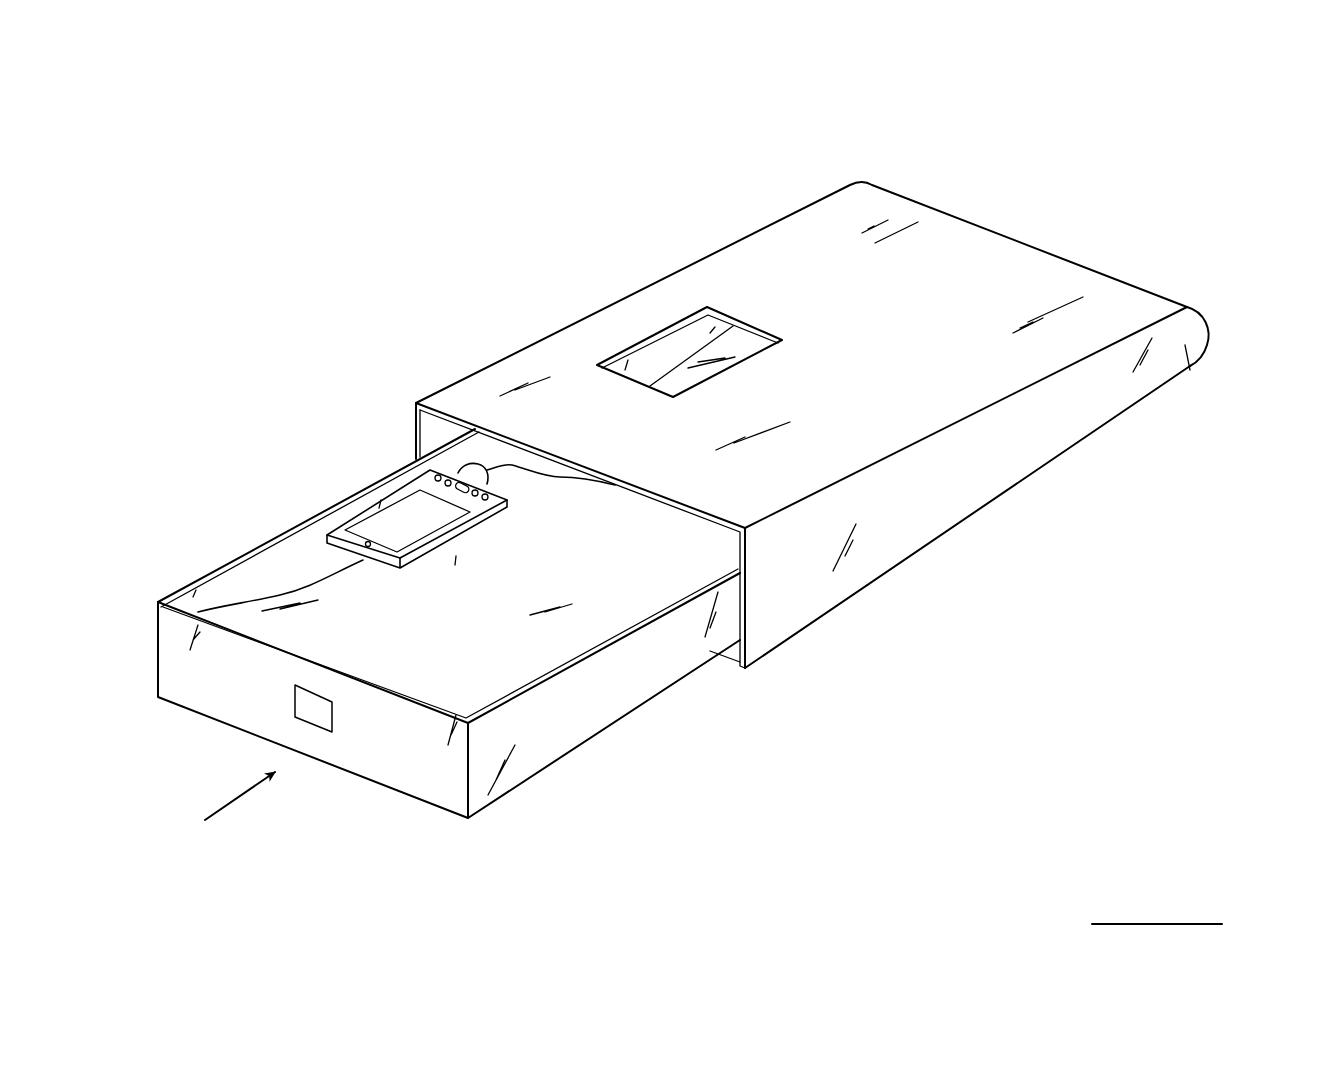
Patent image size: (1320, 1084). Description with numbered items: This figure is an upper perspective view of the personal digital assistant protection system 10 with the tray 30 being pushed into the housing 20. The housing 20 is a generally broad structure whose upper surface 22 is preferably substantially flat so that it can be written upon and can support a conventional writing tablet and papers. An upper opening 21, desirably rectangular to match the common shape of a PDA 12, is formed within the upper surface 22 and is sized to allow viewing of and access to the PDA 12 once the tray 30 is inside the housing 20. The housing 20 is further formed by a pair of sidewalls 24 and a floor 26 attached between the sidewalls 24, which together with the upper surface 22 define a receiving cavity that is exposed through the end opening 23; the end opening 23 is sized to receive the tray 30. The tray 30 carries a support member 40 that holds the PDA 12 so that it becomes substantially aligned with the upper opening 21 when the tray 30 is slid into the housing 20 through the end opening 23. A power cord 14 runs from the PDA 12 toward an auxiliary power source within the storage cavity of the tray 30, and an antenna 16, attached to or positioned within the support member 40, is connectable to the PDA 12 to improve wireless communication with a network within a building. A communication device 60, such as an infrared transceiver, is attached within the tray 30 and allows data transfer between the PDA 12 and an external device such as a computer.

The personal digital assistant protection system 10 is at (1168, 138).
The PDA 12 is at (360, 528).
The power cord 14 is at (518, 468).
The antenna 16 is at (265, 600).
The housing 20 is at (752, 224).
The upper opening 21 is at (658, 333).
The upper surface 22 is at (901, 391).
The end opening 23 is at (743, 592).
The sidewalls 24 is at (433, 430).
The floor 26 is at (730, 650).
The tray 30 is at (600, 750).
The support member 40 is at (460, 652).
The communication device 60 is at (300, 705).